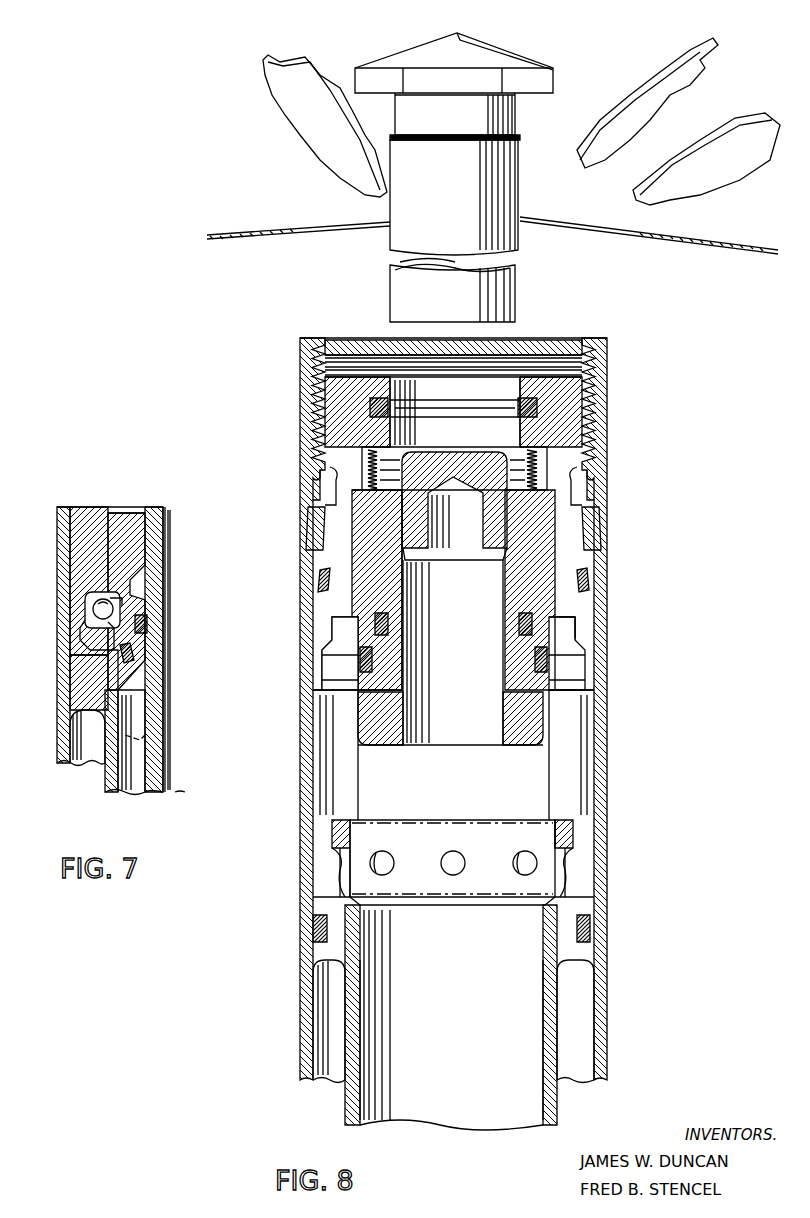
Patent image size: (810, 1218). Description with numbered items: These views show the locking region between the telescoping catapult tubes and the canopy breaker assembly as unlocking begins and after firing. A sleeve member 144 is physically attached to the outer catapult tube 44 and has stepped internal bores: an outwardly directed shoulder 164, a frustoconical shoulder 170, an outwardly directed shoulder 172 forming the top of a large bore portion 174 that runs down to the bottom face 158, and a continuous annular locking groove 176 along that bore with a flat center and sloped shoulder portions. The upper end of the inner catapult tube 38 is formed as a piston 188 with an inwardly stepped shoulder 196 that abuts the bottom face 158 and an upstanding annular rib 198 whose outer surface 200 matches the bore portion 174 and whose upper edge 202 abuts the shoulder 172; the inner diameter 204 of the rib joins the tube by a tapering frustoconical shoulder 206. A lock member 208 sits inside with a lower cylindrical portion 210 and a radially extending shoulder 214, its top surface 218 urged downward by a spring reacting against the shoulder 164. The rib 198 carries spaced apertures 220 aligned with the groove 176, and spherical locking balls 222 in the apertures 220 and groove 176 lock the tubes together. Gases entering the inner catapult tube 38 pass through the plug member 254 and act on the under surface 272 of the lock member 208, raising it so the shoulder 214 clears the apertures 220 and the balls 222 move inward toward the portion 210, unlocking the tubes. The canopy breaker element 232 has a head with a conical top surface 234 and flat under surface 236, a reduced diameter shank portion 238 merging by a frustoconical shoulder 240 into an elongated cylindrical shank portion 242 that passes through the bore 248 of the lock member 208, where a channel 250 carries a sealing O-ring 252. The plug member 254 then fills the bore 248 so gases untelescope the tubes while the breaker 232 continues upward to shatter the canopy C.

In FIG. 8, the canopy breaker element 232 is at (580, 60).
In FIG. 8, the conical top surface 234 is at (495, 55).
In FIG. 8, the flat under surface 236 is at (397, 102).
In FIG. 8, the reduced diameter shank portion 238 is at (494, 118).
In FIG. 8, the frustoconical shoulder 240 is at (520, 138).
In FIG. 8, the elongated cylindrical shank portion 242 is at (504, 283).
In FIG. 7, the elongated cylindrical shank portion 242 is at (165, 575).
In FIG. 8, the canopy C is at (262, 242).
In FIG. 8, the outer catapult tube 44 is at (600, 1048).
In FIG. 7, the outer catapult tube 44 is at (58, 758).
In FIG. 8, the inner catapult tube 38 is at (350, 1097).
In FIG. 7, the inner catapult tube 38 is at (110, 778).
In FIG. 8, the outwardly directed shoulder 164 is at (580, 485).
In FIG. 8, the bore 248 is at (540, 528).
In FIG. 8, the top surface 218 is at (540, 478).
In FIG. 8, the annular recess or channel 250 is at (395, 612).
In FIG. 8, the sealing O-ring 252 is at (385, 640).
In FIG. 8, the bore portion 174 is at (330, 626).
In FIG. 8, the annular locking groove 176 is at (578, 658).
In FIG. 7, the annular locking groove 176 is at (93, 609).
In FIG. 8, the frustoconical shoulder 170 is at (562, 617).
In FIG. 8, the outwardly directed shoulder 172 is at (575, 633).
In FIG. 8, the bottom face 158 is at (583, 698).
In FIG. 8, the plug member 254 is at (459, 735).
In FIG. 8, the outer surface 200 is at (340, 880).
In FIG. 8, the inner diameter 204 is at (360, 840).
In FIG. 8, the apertures 220 is at (552, 850).
In FIG. 7, the apertures 220 is at (92, 633).
In FIG. 8, the upper edge 202 is at (565, 822).
In FIG. 8, the upstanding annular rib 198 is at (565, 890).
In FIG. 7, the upstanding annular rib 198 is at (90, 592).
In FIG. 8, the inwardly stepped shoulder 196 is at (585, 898).
In FIG. 8, the frustoconical shoulder 206 is at (437, 896).
In FIG. 7, the frustoconical shoulder 206 is at (105, 650).
In FIG. 8, the piston 188 is at (585, 965).
In FIG. 7, the piston 188 is at (92, 707).
In FIG. 7, the sleeve member 144 is at (85, 568).
In FIG. 7, the lock member 208 is at (163, 548).
In FIG. 7, the radially extending shoulder 214 is at (115, 598).
In FIG. 7, the spherical locking balls 222 is at (112, 630).
In FIG. 7, the lower cylindrical portion 210 is at (140, 650).
In FIG. 7, the under surface 272 is at (138, 692).